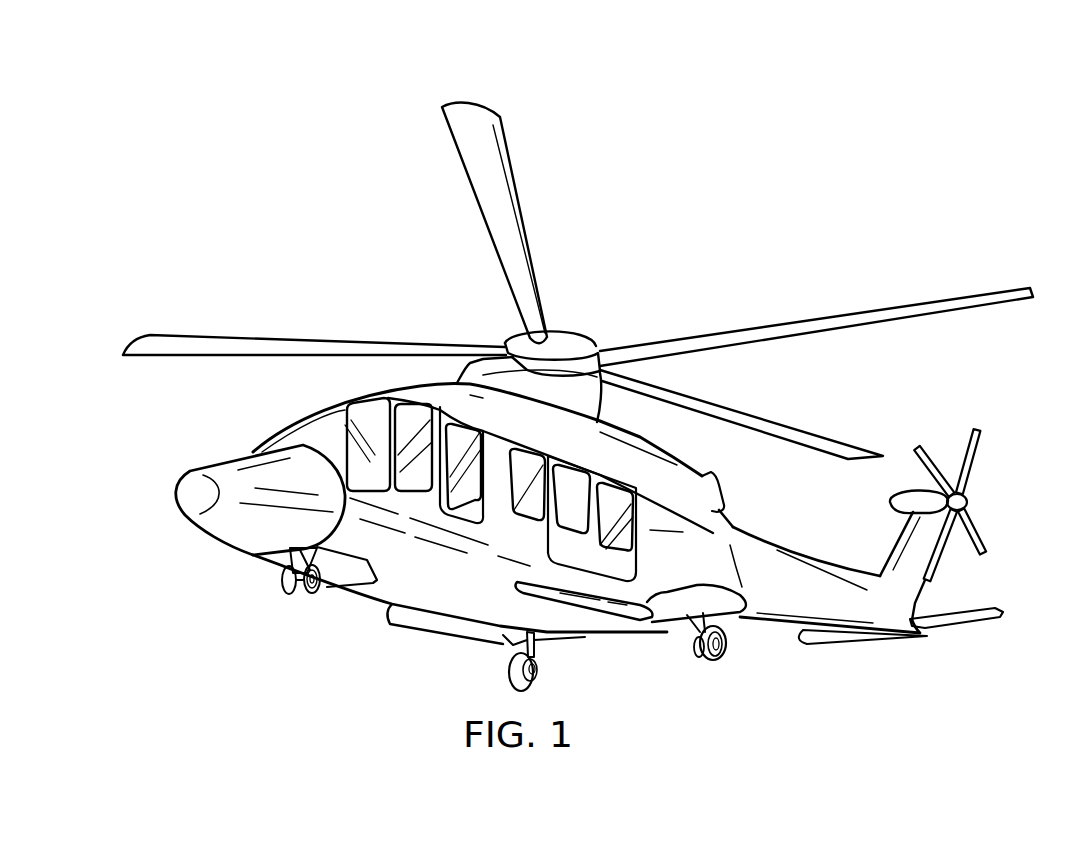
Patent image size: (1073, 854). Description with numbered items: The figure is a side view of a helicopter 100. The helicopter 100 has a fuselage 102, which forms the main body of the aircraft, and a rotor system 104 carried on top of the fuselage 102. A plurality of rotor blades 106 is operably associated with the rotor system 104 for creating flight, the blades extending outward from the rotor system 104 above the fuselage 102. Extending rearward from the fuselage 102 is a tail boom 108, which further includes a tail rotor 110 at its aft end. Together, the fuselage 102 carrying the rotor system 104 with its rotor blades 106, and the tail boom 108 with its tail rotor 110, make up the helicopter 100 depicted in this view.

The helicopter 100 is at (258, 88).
The fuselage 102 is at (227, 470).
The rotor system 104 is at (586, 315).
The rotor blades 106 is at (800, 332).
The tail boom 108 is at (775, 614).
The tail rotor 110 is at (968, 475).